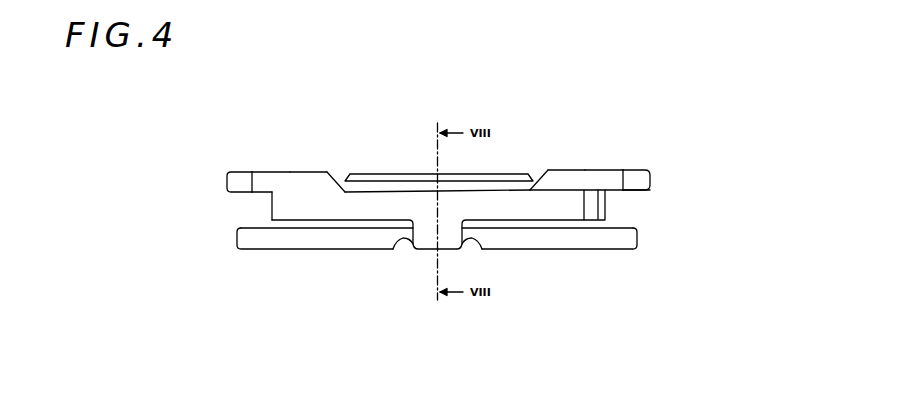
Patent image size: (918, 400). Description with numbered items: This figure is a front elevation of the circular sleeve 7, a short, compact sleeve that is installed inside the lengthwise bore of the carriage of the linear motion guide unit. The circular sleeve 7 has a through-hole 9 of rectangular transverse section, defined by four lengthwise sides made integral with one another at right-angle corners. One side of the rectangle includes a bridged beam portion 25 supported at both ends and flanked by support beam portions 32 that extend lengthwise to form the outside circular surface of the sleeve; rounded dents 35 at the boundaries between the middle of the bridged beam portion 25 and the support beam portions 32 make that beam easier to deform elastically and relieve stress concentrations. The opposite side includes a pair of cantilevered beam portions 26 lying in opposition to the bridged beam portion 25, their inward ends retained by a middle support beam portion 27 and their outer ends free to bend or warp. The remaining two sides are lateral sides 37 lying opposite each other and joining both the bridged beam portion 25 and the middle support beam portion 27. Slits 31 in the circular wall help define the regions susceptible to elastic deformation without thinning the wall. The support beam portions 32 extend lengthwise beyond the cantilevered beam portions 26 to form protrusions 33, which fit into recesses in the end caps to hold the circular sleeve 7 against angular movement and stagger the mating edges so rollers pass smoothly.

The circular sleeve 7 is at (571, 160).
The through-hole 9 is at (264, 216).
The bridged beam portion 25 is at (303, 178).
The cantilevered beam portions 26 is at (330, 242).
The middle support beam portion 27 is at (425, 246).
The slits 31 is at (302, 231).
The support beam portions 32 is at (270, 173).
The protrusions 33 is at (232, 172).
The rounded dents 35 is at (335, 180).
The lateral sides 37 is at (355, 222).